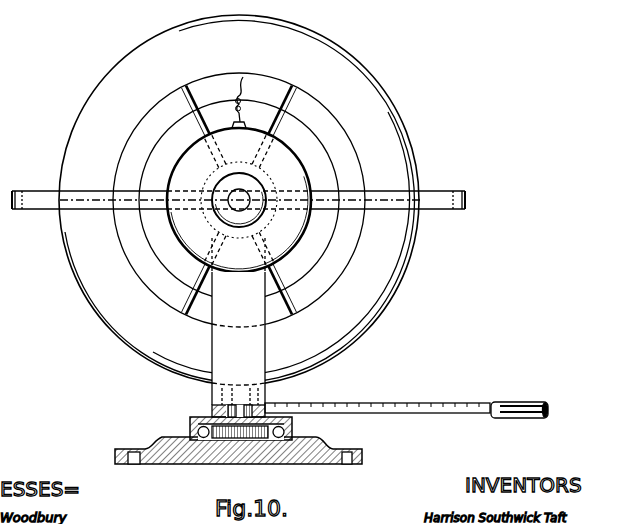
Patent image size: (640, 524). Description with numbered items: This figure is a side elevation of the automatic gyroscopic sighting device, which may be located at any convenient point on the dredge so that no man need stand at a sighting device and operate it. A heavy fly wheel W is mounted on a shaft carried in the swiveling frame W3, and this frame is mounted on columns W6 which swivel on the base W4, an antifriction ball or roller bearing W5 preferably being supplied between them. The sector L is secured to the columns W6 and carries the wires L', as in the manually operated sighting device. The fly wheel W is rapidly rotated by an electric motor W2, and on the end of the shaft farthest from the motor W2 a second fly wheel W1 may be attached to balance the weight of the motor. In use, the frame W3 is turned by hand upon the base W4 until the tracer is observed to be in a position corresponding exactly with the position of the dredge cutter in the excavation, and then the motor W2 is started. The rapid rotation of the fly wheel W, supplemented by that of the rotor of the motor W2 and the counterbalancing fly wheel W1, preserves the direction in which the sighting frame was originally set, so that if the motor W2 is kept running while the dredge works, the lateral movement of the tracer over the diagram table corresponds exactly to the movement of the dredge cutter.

The fly wheel W is at (398, 140).
The counterbalancing fly wheel W1 is at (313, 140).
The electric motor W2 is at (290, 232).
The swiveling frame W3 is at (35, 211).
The base W4 is at (325, 443).
The antifriction ball or roller bearing W5 is at (201, 438).
The columns W6 is at (238, 321).
The sector L is at (377, 393).
The wires L' is at (534, 394).